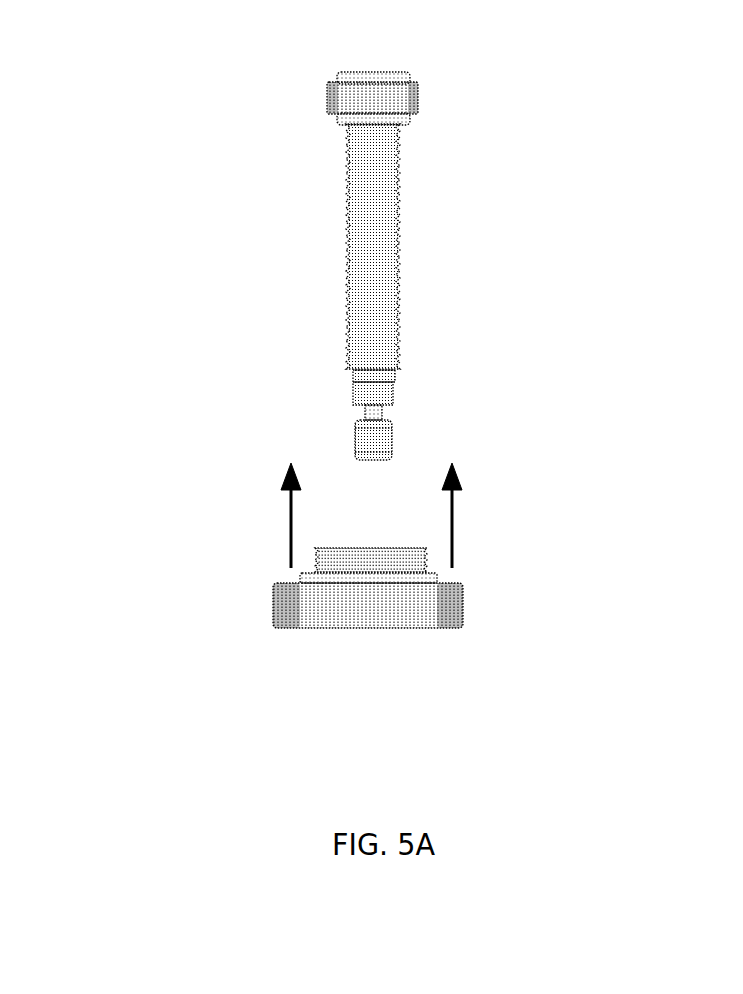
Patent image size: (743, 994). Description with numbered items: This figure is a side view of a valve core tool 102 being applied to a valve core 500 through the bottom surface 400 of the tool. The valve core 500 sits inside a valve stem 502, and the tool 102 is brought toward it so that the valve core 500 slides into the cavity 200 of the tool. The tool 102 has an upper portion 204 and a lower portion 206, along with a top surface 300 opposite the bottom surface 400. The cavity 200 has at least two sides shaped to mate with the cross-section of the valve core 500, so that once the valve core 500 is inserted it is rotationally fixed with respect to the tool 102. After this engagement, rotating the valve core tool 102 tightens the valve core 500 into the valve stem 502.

The valve core tool 102 is at (426, 574).
The cavity 200 is at (383, 574).
The upper portion 204 is at (441, 660).
The lower portion 206 is at (314, 557).
The top surface 300 is at (443, 628).
The bottom surface 400 is at (349, 531).
The valve core 500 is at (358, 266).
The valve stem 502 is at (399, 259).